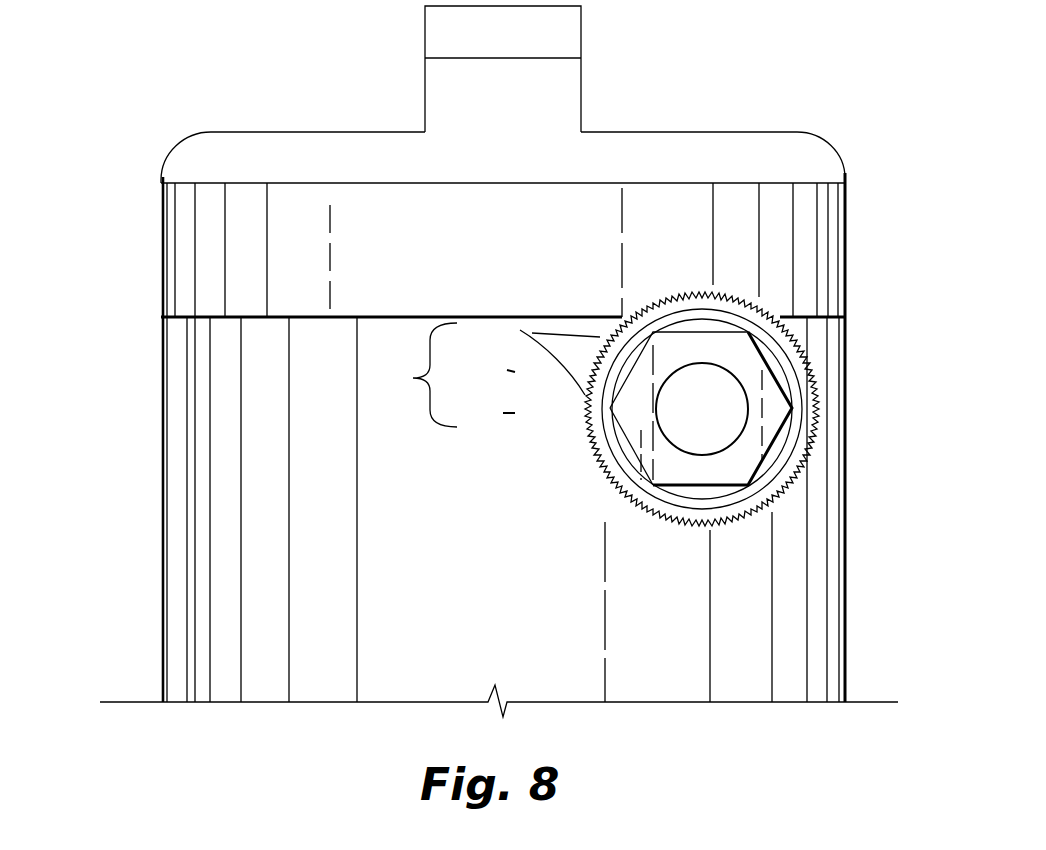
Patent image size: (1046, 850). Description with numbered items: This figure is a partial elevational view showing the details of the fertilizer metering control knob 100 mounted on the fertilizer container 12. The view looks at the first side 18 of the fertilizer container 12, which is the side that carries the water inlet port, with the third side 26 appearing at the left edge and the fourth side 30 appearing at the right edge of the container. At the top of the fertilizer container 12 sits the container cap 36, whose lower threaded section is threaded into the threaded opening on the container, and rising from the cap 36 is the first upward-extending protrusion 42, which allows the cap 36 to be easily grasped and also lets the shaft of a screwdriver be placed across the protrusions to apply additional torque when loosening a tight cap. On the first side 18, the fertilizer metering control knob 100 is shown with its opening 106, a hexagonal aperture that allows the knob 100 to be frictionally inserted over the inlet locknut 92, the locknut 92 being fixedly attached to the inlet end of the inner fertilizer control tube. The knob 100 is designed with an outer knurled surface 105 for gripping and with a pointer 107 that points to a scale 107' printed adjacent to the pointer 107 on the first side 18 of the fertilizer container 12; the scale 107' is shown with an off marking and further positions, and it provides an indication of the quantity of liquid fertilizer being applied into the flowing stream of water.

The first upward-extending protrusion 42 is at (563, 42).
The container cap 36 is at (782, 155).
The pointer 107 is at (690, 301).
The scale 107' is at (286, 375).
The opening 106 is at (765, 352).
The fertilizer metering control knob 100 is at (754, 409).
The inlet locknut 92 is at (768, 423).
The outer knurled surface 105 is at (803, 460).
The third side 26 is at (162, 531).
The fourth side 30 is at (847, 530).
The fertilizer container 12 is at (449, 442).
The first side 18 is at (312, 568).